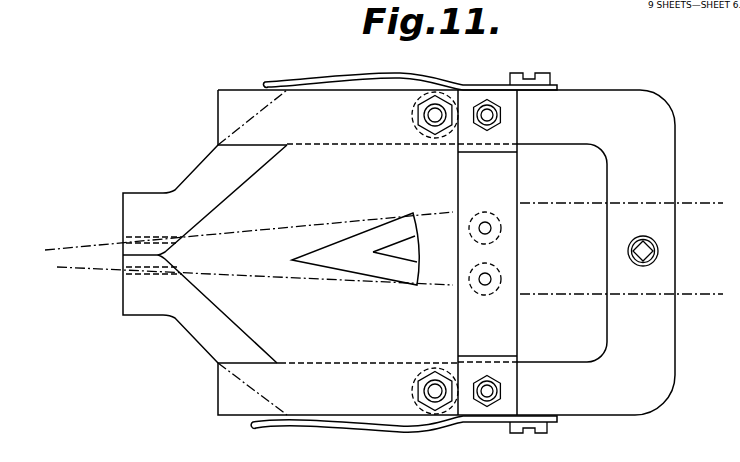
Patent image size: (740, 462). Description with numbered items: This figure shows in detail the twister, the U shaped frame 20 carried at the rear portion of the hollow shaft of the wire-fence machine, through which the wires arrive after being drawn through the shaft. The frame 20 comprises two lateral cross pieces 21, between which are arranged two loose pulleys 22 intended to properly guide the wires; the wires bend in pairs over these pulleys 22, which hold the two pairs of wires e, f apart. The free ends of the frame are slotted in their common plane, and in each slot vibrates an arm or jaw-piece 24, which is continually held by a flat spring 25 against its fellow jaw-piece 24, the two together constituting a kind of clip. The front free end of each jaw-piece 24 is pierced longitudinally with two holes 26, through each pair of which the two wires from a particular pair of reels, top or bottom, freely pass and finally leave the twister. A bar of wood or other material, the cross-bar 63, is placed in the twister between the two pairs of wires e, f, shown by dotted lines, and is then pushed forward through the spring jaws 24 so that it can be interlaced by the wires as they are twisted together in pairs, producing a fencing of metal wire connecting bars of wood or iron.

The U shaped frame 20 is at (470, 252).
The lateral cross pieces 21 is at (505, 170).
The loose pulleys 22 is at (487, 292).
The jaw-piece 24 is at (223, 185).
The flat spring 25 is at (332, 80).
The holes 26 is at (123, 241).
The cross-bar 63 is at (318, 252).
The pair of wires e is at (249, 217).
The pair of wires f is at (450, 288).